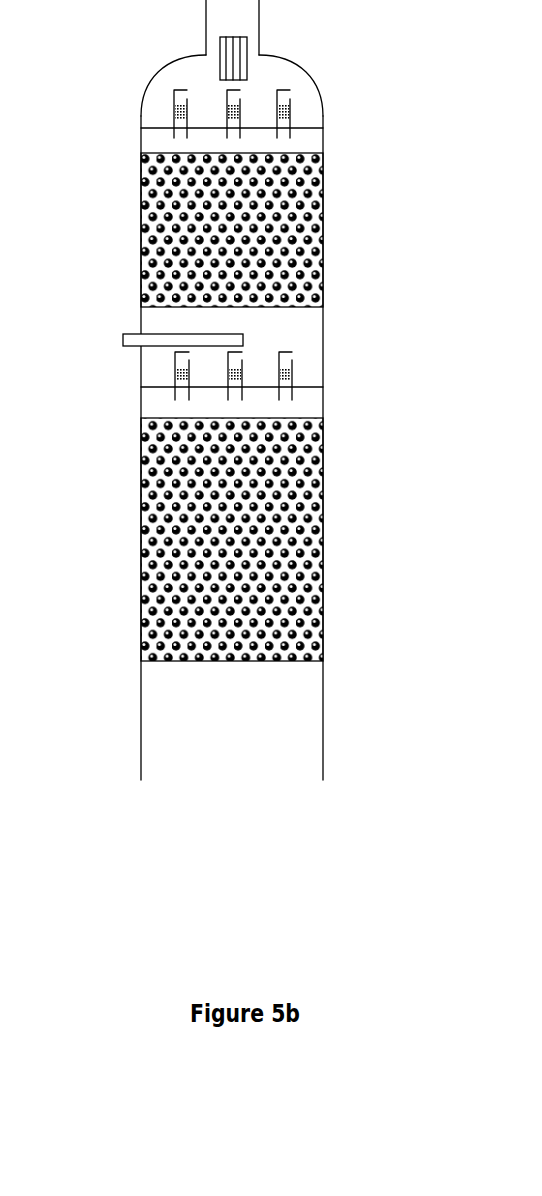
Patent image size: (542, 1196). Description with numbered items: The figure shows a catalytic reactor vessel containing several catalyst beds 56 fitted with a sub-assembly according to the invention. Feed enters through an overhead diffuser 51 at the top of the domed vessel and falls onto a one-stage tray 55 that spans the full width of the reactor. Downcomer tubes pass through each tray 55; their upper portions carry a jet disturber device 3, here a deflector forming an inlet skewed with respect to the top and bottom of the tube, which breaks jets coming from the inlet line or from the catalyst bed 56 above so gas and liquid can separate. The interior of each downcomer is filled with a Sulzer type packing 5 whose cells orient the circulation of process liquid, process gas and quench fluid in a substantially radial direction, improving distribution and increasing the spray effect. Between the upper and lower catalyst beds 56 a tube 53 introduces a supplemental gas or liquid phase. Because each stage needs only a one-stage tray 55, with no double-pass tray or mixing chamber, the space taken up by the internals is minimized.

The jet disturber device 3 is at (177, 90).
The packing 5 is at (291, 108).
The overhead diffuser 51 is at (243, 50).
The tube 53 is at (123, 340).
The one-stage tray 55 is at (323, 128).
The catalyst bed 56 is at (141, 230).